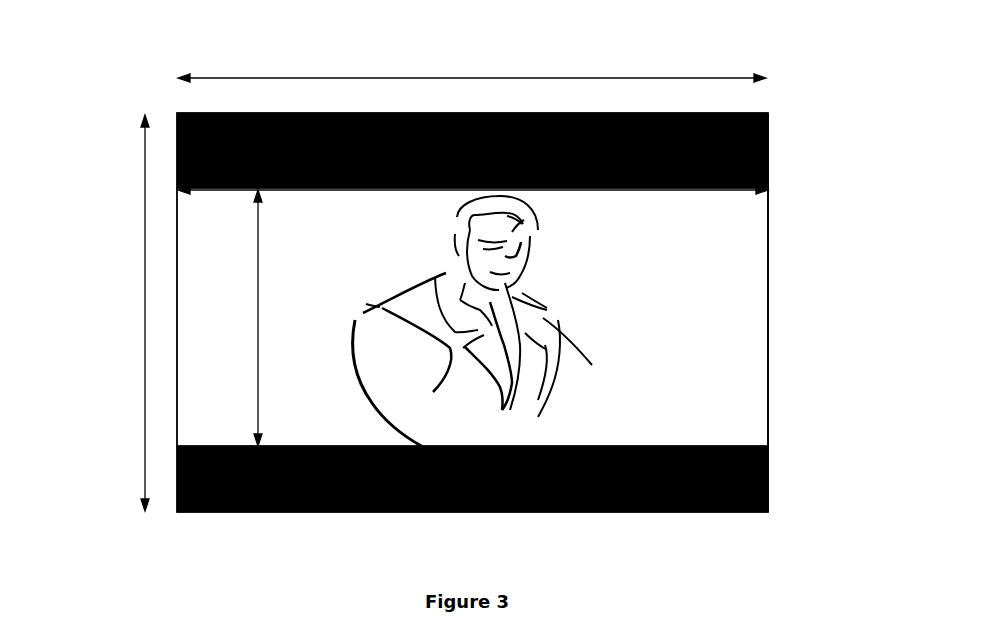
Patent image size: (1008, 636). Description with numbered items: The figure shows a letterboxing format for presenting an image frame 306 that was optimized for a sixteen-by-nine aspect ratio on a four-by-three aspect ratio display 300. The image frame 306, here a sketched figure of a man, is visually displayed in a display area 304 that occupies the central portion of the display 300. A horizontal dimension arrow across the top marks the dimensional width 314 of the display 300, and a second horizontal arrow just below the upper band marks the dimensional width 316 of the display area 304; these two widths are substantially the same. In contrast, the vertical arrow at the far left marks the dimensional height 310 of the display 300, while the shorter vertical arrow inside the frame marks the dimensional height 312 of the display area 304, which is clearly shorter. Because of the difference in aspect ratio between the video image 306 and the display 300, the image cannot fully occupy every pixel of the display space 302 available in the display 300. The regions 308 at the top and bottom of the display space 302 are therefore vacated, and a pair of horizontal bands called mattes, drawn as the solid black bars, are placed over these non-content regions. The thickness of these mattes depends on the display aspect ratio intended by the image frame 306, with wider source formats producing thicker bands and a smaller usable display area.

The display 300 is at (492, 558).
The display space 302 is at (768, 338).
The display area 304 is at (745, 410).
The image frame 306 is at (524, 281).
The regions 308 is at (718, 512).
The dimensional height of the display 310 is at (145, 313).
The dimensional height of the display area 312 is at (258, 360).
The dimensional width of the display 314 is at (415, 78).
The dimensional width of the display area 316 is at (768, 190).